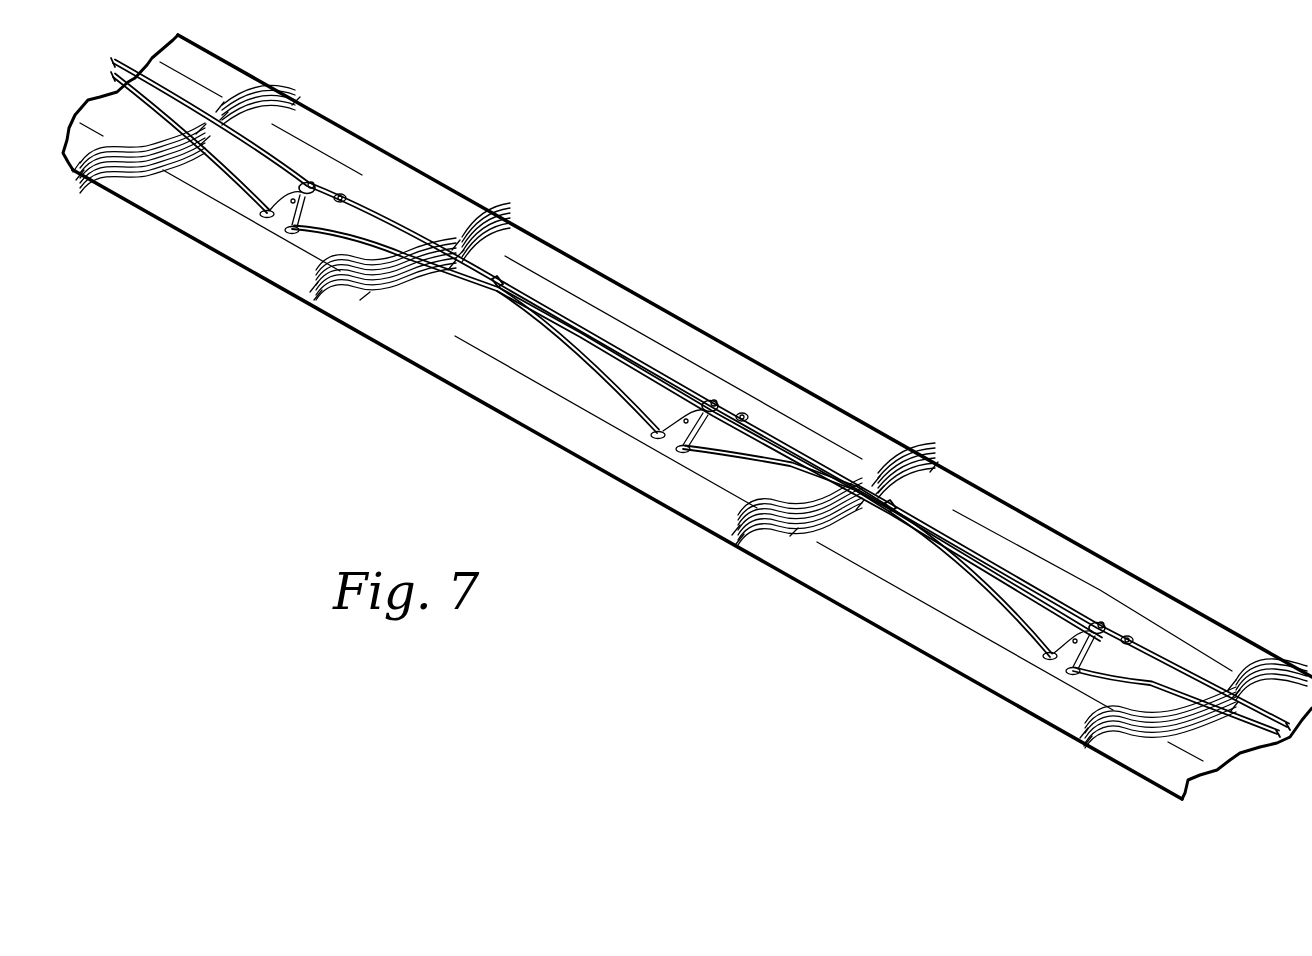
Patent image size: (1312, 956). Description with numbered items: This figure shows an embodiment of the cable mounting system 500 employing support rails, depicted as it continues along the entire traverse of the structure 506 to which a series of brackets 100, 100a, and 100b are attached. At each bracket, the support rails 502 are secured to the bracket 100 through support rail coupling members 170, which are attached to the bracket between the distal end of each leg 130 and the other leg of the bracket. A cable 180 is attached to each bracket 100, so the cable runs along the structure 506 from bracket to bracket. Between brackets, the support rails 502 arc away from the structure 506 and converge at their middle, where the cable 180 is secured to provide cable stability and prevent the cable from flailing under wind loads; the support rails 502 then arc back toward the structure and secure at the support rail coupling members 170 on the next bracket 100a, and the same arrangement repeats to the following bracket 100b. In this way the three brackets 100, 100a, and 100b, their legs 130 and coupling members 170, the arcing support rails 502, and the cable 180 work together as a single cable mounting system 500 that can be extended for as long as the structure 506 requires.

The structure 506 is at (860, 601).
The cable mounting system 500 is at (902, 307).
The support rails 502 is at (225, 174).
The cable 180 is at (382, 230).
The bracket 100b is at (310, 182).
The bracket 100a is at (640, 400).
The bracket 100 is at (1122, 668).
The support rail coupling members 170 is at (660, 438).
The leg 130 is at (1073, 674).